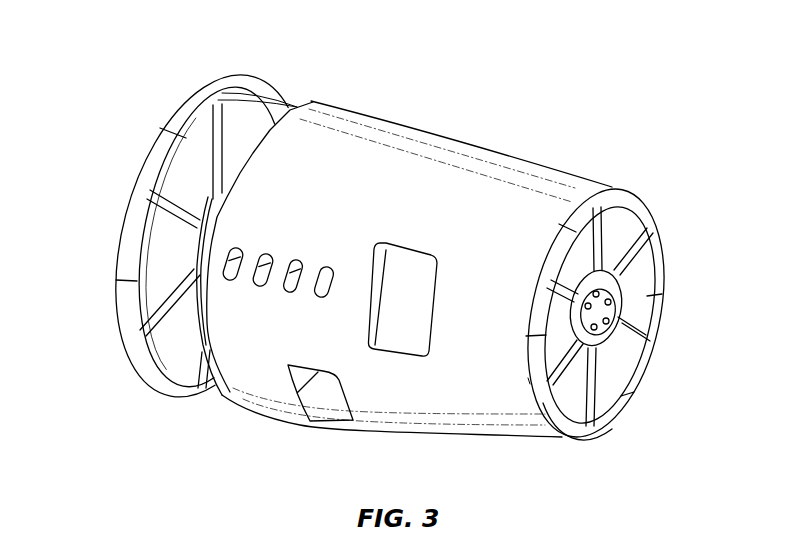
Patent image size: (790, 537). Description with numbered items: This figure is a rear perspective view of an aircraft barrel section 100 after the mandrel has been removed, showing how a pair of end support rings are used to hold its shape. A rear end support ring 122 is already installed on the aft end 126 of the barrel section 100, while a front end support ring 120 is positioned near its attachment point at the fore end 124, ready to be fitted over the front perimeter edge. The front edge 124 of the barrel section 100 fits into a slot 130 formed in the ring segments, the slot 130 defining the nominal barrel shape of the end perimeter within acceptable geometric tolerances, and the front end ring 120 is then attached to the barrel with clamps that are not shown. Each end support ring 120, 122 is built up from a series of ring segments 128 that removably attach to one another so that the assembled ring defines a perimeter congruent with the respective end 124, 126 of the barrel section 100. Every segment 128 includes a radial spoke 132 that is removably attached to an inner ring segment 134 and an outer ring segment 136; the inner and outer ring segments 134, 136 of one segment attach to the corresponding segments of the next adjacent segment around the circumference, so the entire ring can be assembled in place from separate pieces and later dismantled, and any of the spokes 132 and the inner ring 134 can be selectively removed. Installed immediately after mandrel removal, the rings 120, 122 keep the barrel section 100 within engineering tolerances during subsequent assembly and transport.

The barrel section 100 is at (452, 177).
The front end support ring 120 is at (124, 184).
The rear end support ring 122 is at (640, 312).
The fore end 124 is at (263, 142).
The aft end 126 is at (528, 378).
The ring segments 128 is at (194, 106).
The slot 130 is at (293, 100).
The radial spokes 132 is at (213, 153).
The inner ring segment 134 is at (617, 305).
The outer ring segment 136 is at (655, 277).